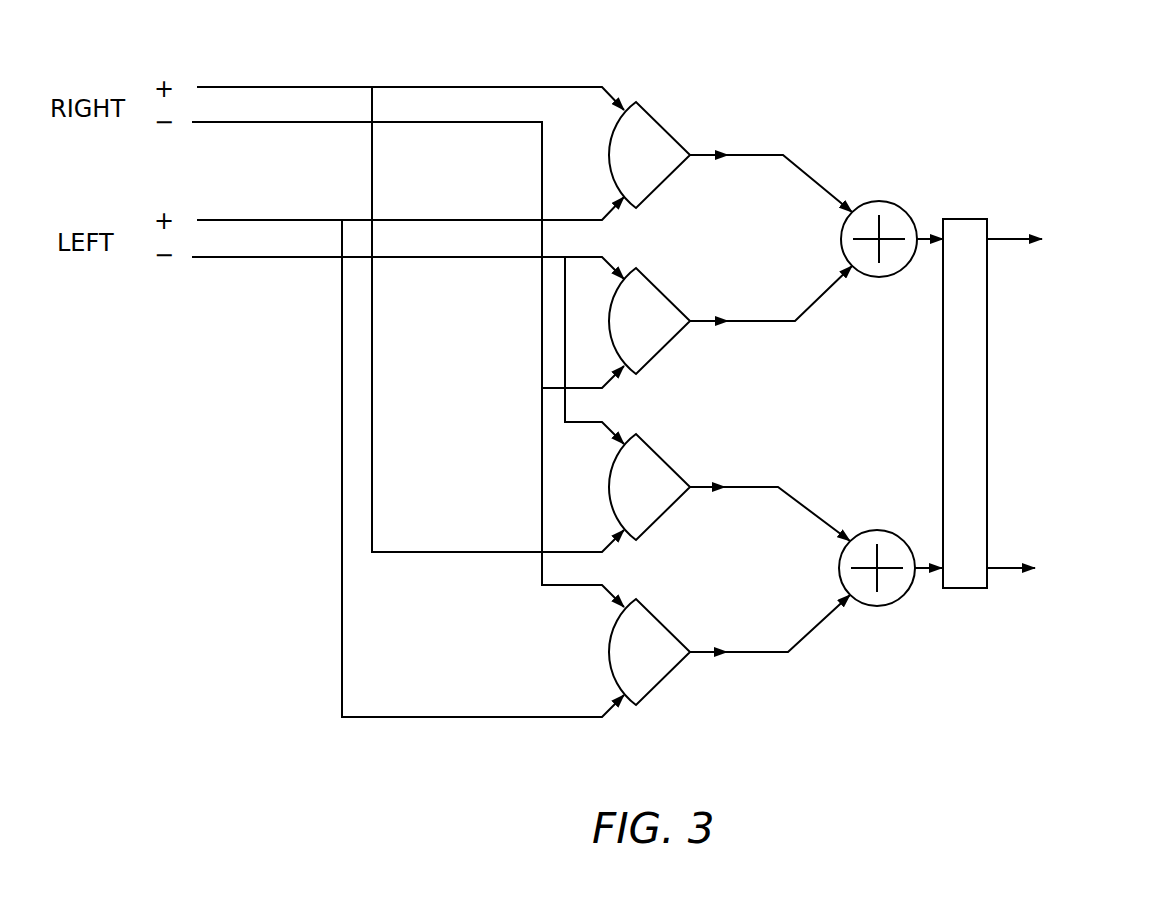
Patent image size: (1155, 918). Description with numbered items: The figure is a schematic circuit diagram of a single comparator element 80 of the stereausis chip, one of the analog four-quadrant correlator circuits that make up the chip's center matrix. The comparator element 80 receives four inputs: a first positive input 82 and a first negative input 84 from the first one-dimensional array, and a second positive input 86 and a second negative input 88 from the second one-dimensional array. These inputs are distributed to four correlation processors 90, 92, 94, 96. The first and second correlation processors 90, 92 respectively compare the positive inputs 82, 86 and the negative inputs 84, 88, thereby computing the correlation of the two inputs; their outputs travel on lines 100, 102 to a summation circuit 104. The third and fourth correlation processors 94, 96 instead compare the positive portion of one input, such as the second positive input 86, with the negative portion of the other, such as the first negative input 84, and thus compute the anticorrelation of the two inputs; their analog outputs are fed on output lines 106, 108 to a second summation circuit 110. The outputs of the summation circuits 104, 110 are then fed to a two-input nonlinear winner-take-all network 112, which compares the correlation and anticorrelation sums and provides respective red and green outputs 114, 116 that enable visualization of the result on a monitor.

The comparator element 80 is at (752, 86).
The first positive input 82 is at (257, 217).
The first negative input 84 is at (257, 254).
The second positive input 86 is at (257, 84).
The second negative input 88 is at (257, 119).
The first correlation processor 90 is at (676, 143).
The second correlation processor 92 is at (674, 302).
The third correlation processor 94 is at (672, 470).
The fourth correlation processor 96 is at (663, 624).
The output line 100 is at (784, 155).
The output line 102 is at (786, 320).
The summation circuit 104 is at (878, 201).
The output line 106 is at (762, 487).
The output line 108 is at (755, 652).
The second summation circuit 110 is at (875, 530).
The winner-take-all network 112 is at (963, 219).
The red output 114 is at (1010, 239).
The green output 116 is at (1006, 568).